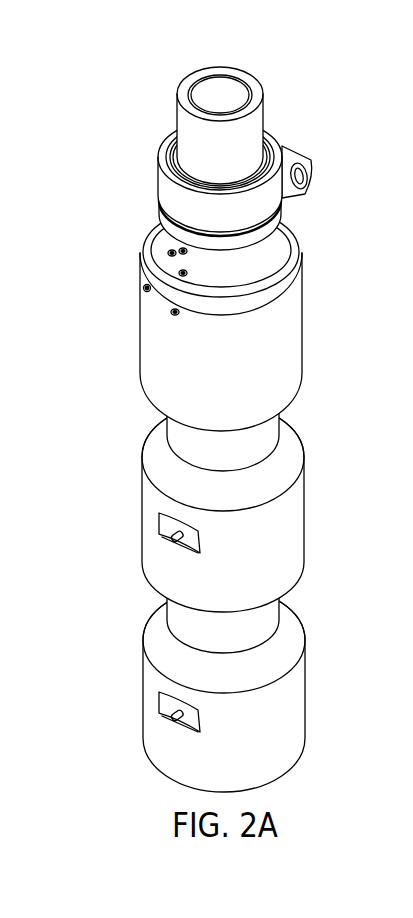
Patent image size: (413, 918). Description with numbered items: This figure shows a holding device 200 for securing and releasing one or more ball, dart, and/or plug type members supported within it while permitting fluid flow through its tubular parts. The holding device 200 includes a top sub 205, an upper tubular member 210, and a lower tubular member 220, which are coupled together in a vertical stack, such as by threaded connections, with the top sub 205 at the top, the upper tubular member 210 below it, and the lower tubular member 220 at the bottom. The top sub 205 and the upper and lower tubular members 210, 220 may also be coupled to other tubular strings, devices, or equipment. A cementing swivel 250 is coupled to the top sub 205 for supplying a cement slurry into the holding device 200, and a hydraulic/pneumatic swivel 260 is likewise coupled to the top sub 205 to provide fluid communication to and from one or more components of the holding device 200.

The holding device 200 is at (218, 429).
The top sub 205 is at (153, 324).
The upper tubular member 210 is at (148, 517).
The lower tubular member 220 is at (148, 677).
The cementing swivel 250 is at (163, 182).
The hydraulic/pneumatic swivel 260 is at (160, 232).